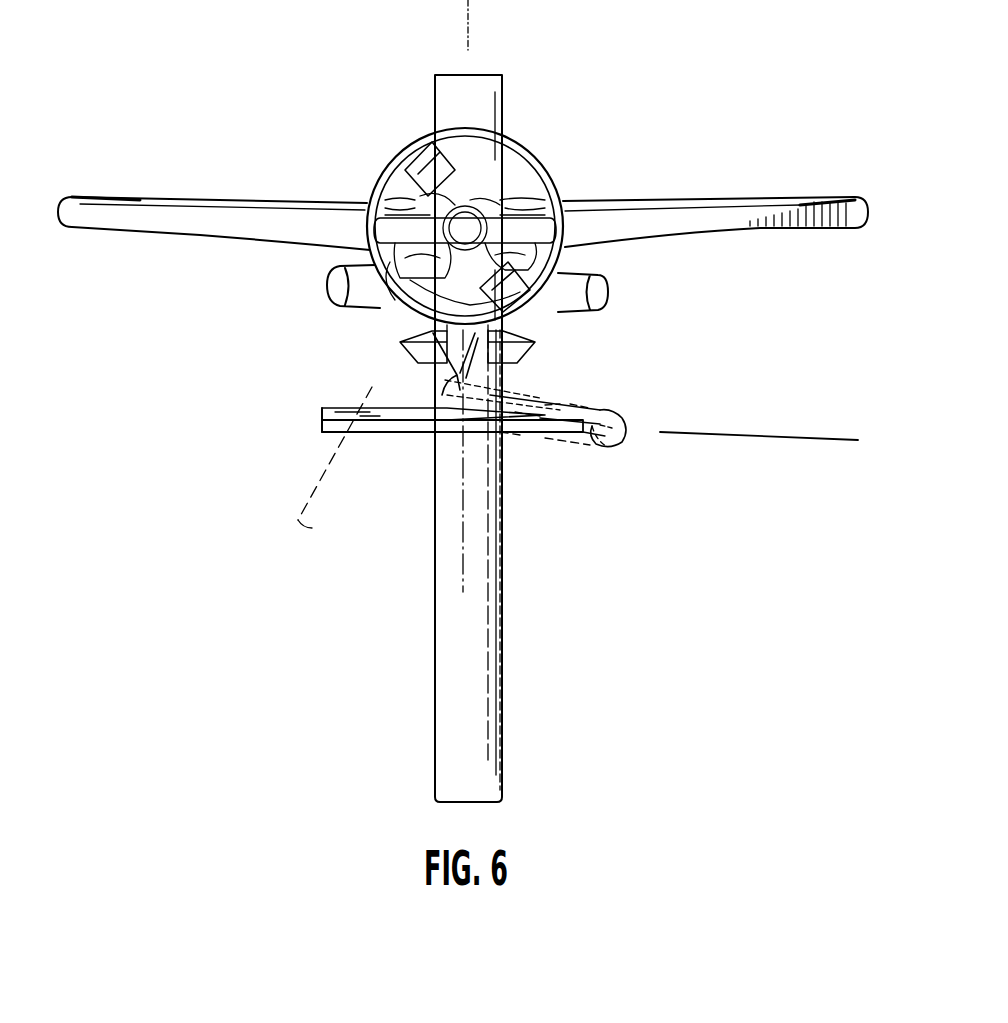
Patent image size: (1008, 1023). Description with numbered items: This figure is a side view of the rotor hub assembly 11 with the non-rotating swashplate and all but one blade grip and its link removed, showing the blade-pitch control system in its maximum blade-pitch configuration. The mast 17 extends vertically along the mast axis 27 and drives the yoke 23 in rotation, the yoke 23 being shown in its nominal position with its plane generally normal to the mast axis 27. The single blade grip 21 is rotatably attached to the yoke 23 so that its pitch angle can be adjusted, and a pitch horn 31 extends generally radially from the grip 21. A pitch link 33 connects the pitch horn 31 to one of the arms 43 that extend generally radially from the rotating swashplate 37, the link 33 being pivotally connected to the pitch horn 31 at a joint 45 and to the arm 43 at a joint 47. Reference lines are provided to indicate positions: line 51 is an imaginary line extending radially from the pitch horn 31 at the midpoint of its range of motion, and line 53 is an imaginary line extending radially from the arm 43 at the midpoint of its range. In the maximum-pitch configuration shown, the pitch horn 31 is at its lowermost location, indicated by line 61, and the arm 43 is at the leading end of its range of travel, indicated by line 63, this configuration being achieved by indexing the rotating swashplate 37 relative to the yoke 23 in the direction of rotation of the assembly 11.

The rotor hub assembly 11 is at (660, 152).
The mast 17 is at (434, 725).
The blade grip 21 is at (536, 143).
The yoke 23 is at (187, 197).
The mast axis 27 is at (468, 22).
The pitch horn 31 is at (402, 350).
The pitch link 33 is at (523, 408).
The rotating swashplate 37 is at (513, 434).
The arm 43 is at (586, 410).
The joint 45 is at (452, 410).
The joint 47 is at (620, 421).
The line 51 is at (312, 528).
The line 53 is at (590, 437).
The line 61 is at (434, 565).
The line 63 is at (750, 438).